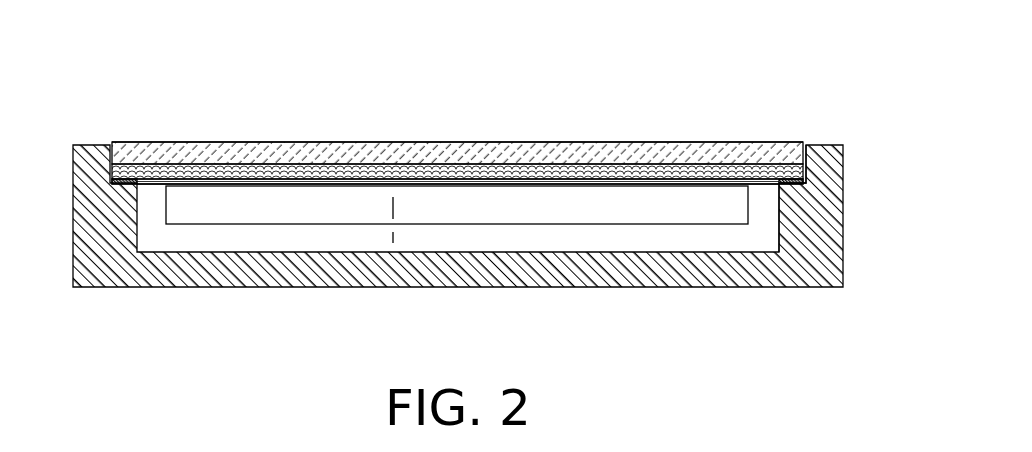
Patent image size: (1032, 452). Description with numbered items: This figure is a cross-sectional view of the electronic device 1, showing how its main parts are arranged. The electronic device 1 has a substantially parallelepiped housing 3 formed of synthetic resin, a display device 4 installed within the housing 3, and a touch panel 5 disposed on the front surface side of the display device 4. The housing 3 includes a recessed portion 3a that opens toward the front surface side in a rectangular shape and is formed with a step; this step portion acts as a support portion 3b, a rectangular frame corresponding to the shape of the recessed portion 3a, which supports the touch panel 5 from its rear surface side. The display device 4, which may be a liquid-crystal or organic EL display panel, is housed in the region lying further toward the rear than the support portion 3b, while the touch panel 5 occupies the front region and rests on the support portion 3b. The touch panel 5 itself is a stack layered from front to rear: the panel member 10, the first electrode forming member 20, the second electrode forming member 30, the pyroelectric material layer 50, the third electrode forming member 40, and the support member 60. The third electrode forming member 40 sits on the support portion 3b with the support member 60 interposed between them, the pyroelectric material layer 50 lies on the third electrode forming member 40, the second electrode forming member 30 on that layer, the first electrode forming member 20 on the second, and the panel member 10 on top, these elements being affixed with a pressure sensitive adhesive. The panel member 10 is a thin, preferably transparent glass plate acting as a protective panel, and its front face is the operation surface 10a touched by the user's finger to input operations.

The electronic device 1 is at (135, 62).
The housing 3 is at (93, 284).
The recessed portion 3a is at (779, 178).
The support portion 3b is at (786, 162).
The display device 4 is at (327, 222).
The touch panel 5 is at (457, 121).
The panel member 10 is at (283, 147).
The operation surface 10a is at (478, 142).
The first electrode forming member 20 is at (370, 170).
The second electrode forming member 30 is at (423, 178).
The third electrode forming member 40 is at (456, 184).
The pyroelectric material layer 50 is at (393, 243).
The support member 60 is at (124, 187).